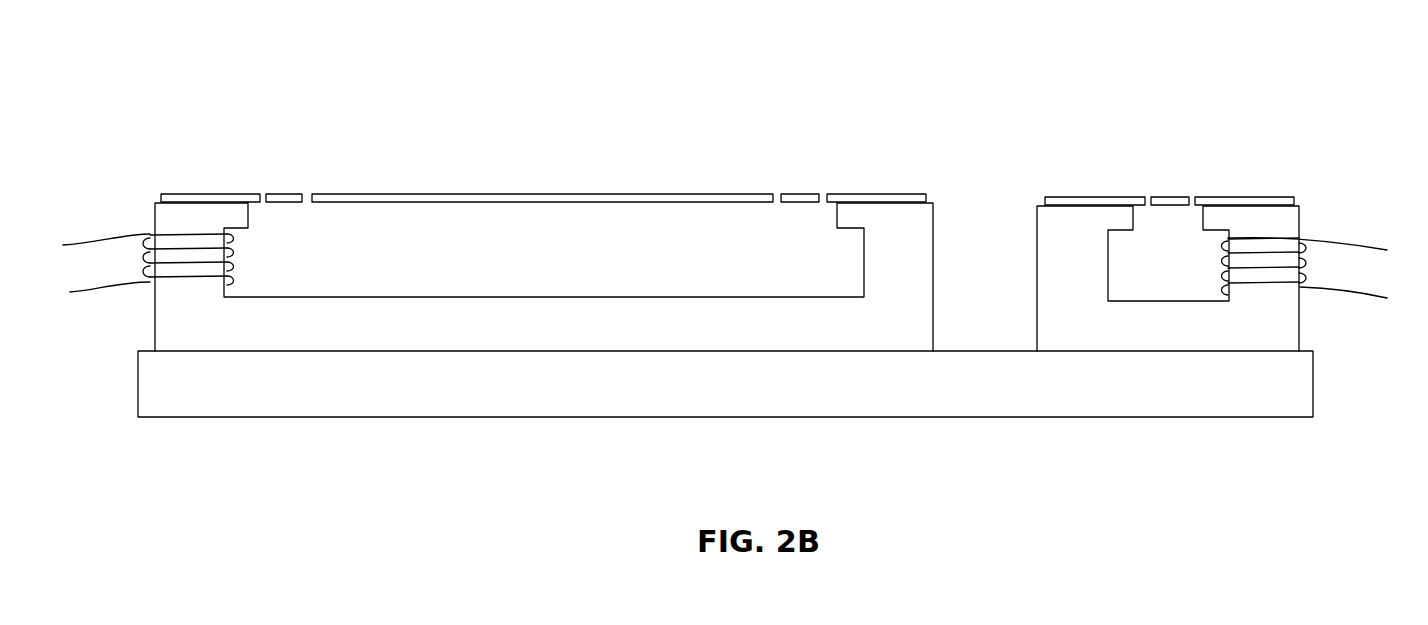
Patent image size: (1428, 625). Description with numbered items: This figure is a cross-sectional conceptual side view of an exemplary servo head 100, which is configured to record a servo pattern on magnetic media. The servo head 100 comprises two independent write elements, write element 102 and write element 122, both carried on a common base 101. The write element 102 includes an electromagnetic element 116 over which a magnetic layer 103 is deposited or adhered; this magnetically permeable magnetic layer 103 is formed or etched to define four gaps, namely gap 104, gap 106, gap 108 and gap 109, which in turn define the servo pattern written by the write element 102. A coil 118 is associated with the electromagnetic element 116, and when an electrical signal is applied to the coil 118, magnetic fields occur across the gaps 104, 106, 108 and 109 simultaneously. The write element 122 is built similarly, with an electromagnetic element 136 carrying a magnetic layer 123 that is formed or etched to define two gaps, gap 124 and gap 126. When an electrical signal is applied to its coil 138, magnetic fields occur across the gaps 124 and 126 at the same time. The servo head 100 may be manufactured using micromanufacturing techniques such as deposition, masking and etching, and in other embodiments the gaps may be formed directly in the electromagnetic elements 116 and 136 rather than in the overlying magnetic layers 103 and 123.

The servo head 100 is at (113, 172).
The base 101 is at (702, 397).
The write element 102 is at (895, 153).
The magnetic layer 103 is at (476, 193).
The gap 104 is at (262, 190).
The gap 106 is at (305, 190).
The gap 108 is at (776, 190).
The gap 109 is at (824, 190).
The electromagnetic element 116 is at (524, 340).
The coil 118 is at (130, 283).
The write element 122 is at (1316, 177).
The magnetic layer 123 is at (1108, 196).
The gap 124 is at (1150, 193).
The gap 126 is at (1192, 193).
The electromagnetic element 136 is at (1157, 332).
The coil 138 is at (1312, 248).